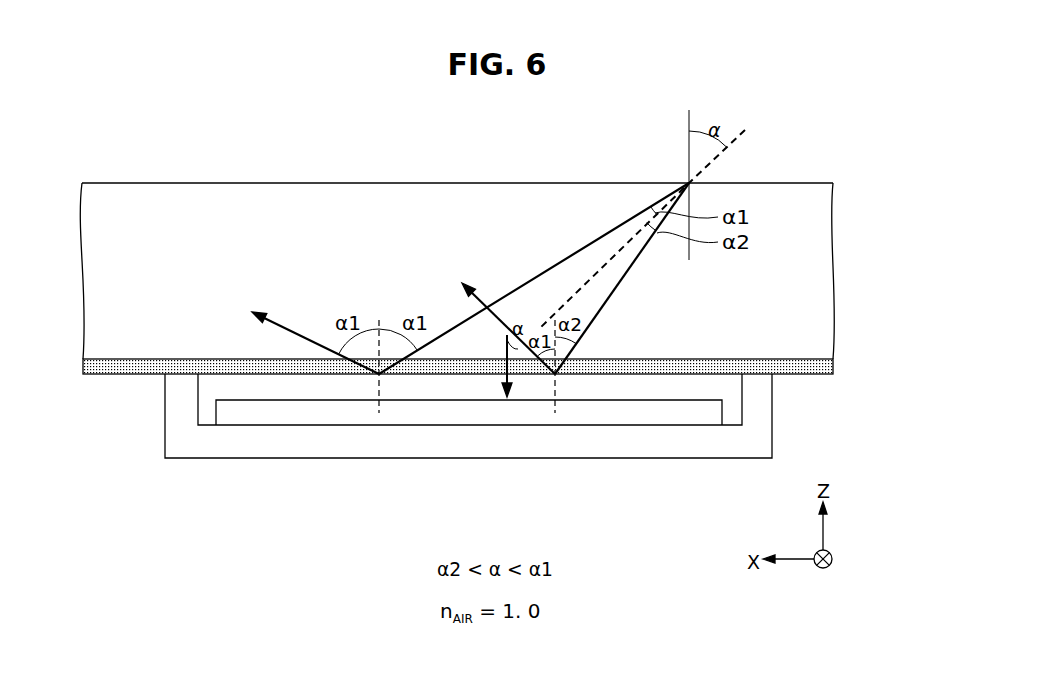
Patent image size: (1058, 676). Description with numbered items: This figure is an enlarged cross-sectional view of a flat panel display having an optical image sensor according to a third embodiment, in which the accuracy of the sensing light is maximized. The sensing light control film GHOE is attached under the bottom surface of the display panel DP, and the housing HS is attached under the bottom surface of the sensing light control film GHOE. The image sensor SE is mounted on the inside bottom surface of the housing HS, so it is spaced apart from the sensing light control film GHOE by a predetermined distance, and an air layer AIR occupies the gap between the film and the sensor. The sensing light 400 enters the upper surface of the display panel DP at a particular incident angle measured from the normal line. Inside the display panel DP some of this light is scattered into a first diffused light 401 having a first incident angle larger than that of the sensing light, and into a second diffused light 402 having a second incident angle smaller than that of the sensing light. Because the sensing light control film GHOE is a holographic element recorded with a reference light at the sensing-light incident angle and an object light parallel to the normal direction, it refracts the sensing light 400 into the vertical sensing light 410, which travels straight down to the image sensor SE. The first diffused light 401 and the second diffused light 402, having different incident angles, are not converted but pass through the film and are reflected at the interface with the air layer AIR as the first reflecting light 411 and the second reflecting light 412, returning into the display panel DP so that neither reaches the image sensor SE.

The sensing light 400 is at (613, 253).
The first diffused light 401 is at (572, 255).
The second diffused light 402 is at (630, 270).
The vertical sensing light 410 is at (498, 380).
The first reflecting light 411 is at (300, 334).
The second reflecting light 412 is at (488, 306).
The display panel DP is at (830, 273).
The sensing light control film GHOE is at (828, 369).
The air layer AIR is at (725, 388).
The housing HS is at (624, 442).
The image sensor SE is at (673, 413).